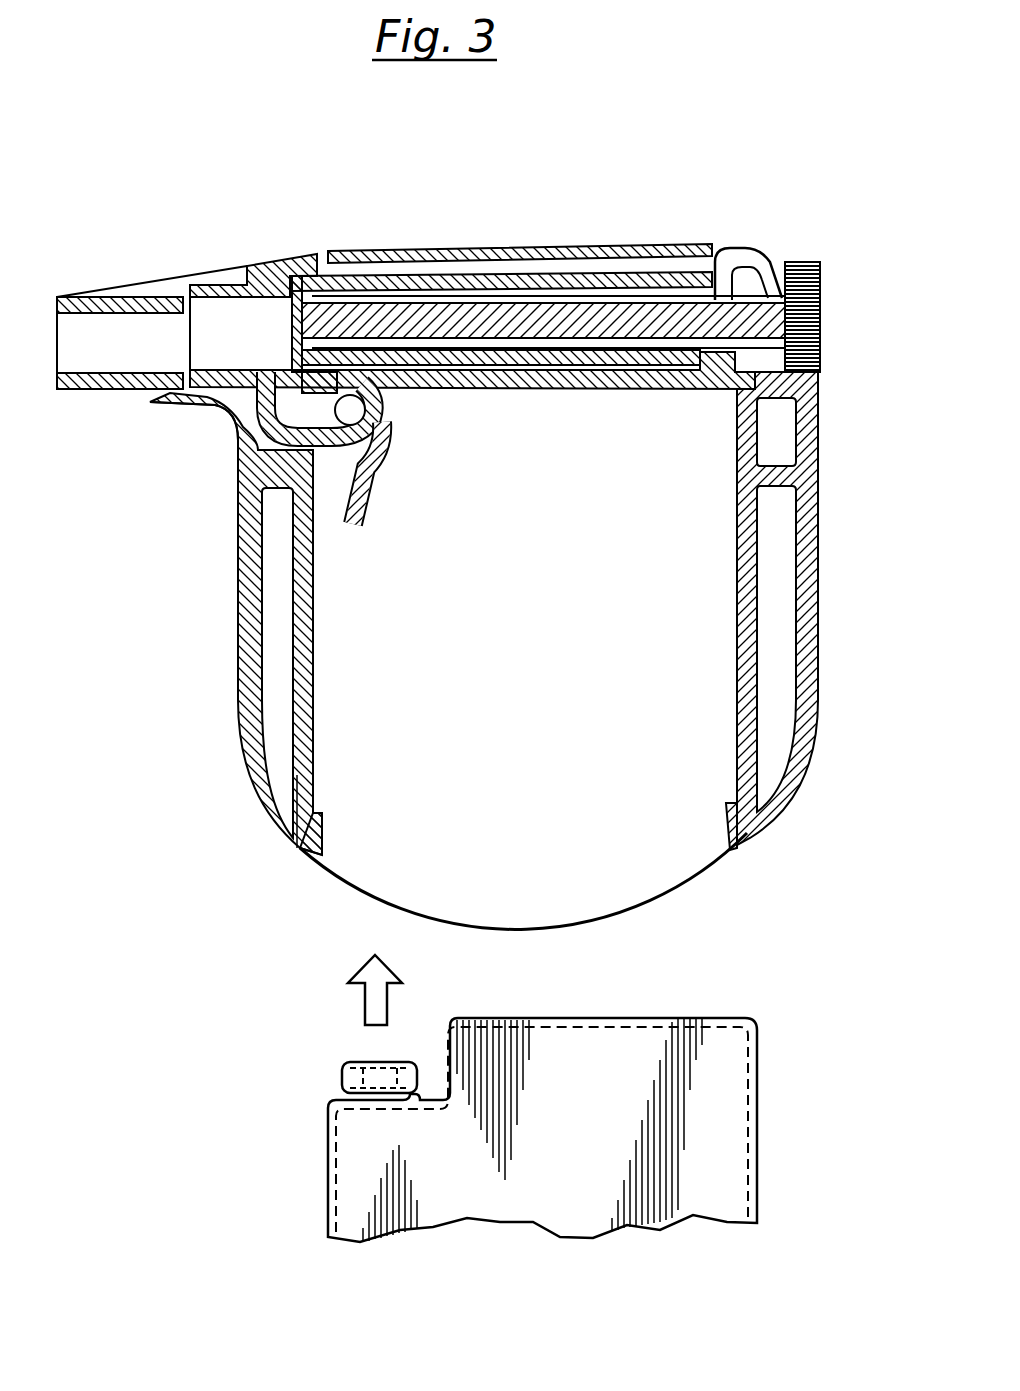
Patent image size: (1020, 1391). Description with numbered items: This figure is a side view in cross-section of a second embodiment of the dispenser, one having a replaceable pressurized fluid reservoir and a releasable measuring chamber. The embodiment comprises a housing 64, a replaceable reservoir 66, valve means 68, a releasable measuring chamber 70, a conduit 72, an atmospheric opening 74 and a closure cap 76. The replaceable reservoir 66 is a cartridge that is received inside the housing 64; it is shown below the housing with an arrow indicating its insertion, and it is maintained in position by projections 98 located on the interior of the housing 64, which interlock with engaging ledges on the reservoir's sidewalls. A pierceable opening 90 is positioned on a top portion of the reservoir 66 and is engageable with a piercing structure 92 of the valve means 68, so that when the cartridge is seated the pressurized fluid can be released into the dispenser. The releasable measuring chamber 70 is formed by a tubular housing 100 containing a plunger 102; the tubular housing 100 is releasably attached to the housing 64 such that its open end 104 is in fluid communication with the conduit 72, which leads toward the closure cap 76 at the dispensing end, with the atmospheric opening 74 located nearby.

The housing 64 is at (812, 632).
The replaceable reservoir 66 is at (737, 1167).
The valve means 68 is at (300, 452).
The releasable measuring chamber 70 is at (610, 266).
The conduit 72 is at (203, 322).
The atmospheric opening 74 is at (197, 400).
The closure cap 76 is at (68, 296).
The pierceable opening 90 is at (362, 1060).
The piercing structure 92 is at (350, 517).
The projections 98 is at (320, 808).
The tubular housing 100 is at (345, 262).
The plunger 102 is at (428, 320).
The open end 104 is at (283, 322).